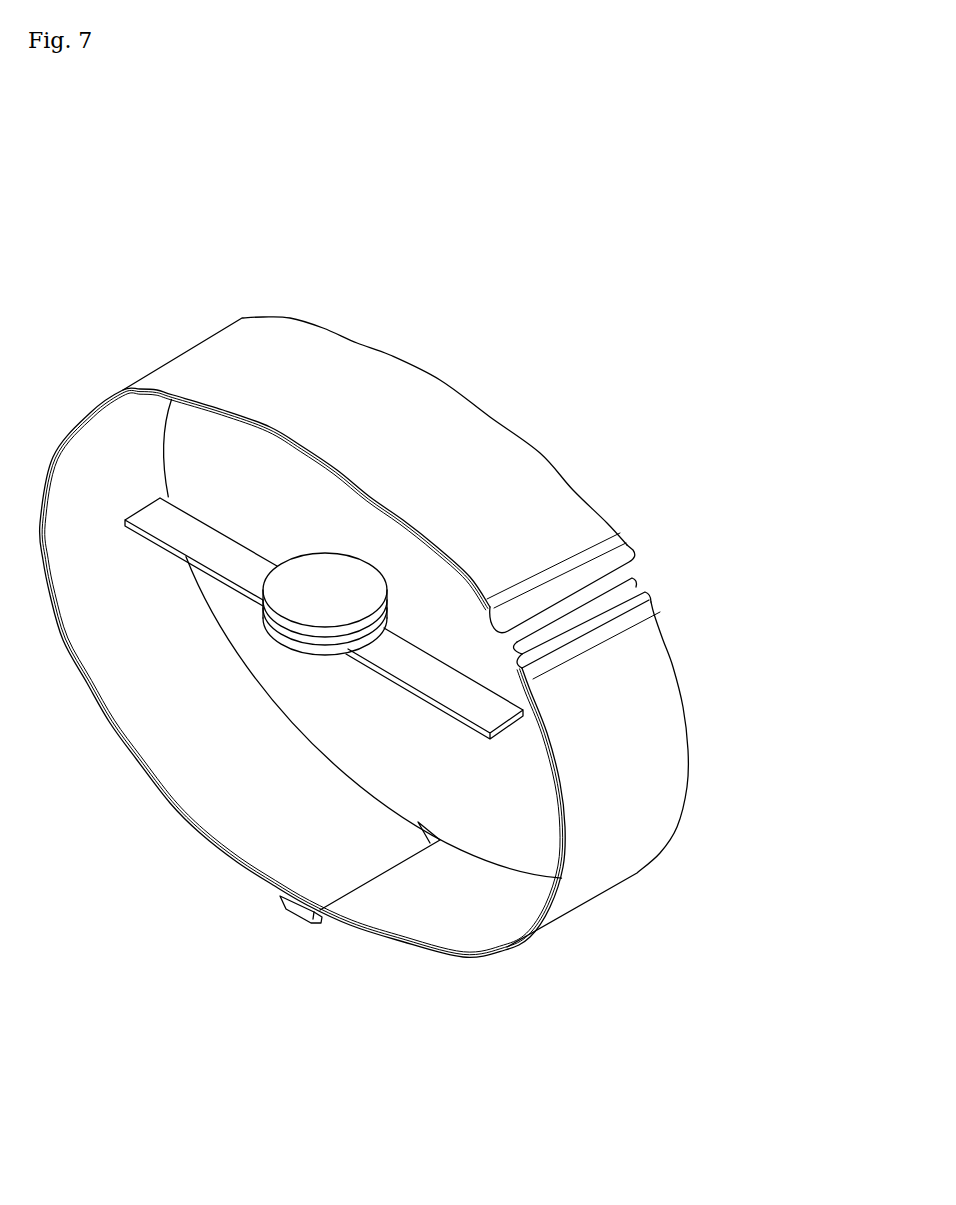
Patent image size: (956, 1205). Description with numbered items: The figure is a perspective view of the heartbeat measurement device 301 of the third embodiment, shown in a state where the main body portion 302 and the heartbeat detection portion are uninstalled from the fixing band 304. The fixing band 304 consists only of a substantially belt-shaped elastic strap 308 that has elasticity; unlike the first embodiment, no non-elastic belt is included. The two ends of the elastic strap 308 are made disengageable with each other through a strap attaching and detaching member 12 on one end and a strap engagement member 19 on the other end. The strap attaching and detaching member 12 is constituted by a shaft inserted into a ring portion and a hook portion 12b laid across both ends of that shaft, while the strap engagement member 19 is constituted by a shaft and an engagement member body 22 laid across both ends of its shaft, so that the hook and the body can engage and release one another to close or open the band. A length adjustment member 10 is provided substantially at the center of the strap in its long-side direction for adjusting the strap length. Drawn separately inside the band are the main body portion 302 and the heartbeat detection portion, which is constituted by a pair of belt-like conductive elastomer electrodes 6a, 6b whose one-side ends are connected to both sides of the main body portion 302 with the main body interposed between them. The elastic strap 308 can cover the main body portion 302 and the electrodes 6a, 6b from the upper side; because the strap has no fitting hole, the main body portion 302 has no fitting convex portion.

The heartbeat measurement device 301 is at (388, 643).
The fixing band 304 is at (548, 365).
The elastic strap 308 is at (150, 790).
The strap engagement member 19 is at (632, 549).
The engagement member body 22 is at (637, 561).
The strap attaching and detaching member 12 is at (651, 578).
The hook portion 12b is at (517, 647).
The length adjustment member 10 is at (290, 920).
The electrode 6a is at (146, 540).
The electrode 6b is at (441, 710).
The main body portion 302 is at (332, 657).